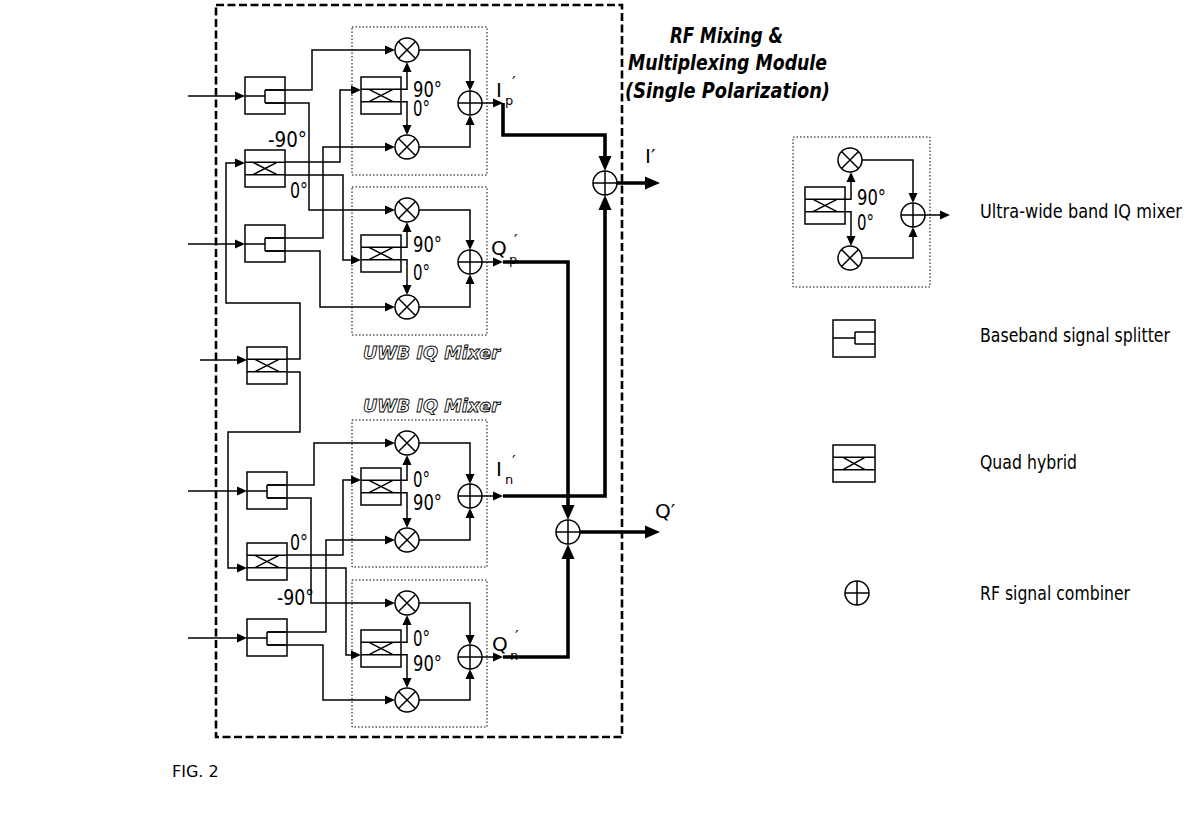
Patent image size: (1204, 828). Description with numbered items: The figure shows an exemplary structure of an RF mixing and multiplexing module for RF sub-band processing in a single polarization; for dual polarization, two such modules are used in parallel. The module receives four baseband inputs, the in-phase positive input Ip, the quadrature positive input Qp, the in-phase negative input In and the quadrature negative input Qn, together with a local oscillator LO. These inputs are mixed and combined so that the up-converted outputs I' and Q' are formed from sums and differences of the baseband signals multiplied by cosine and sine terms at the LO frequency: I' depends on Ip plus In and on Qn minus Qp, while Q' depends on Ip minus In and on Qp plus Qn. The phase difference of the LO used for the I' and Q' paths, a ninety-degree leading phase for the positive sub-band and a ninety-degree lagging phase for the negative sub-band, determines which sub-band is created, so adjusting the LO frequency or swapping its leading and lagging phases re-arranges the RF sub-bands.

The in-phase positive baseband input Ip is at (289, 129).
The quadrature positive baseband input Qp is at (289, 227).
The in-phase negative baseband input In is at (289, 523).
The quadrature negative baseband input Qn is at (289, 620).
The local oscillator LO is at (241, 366).